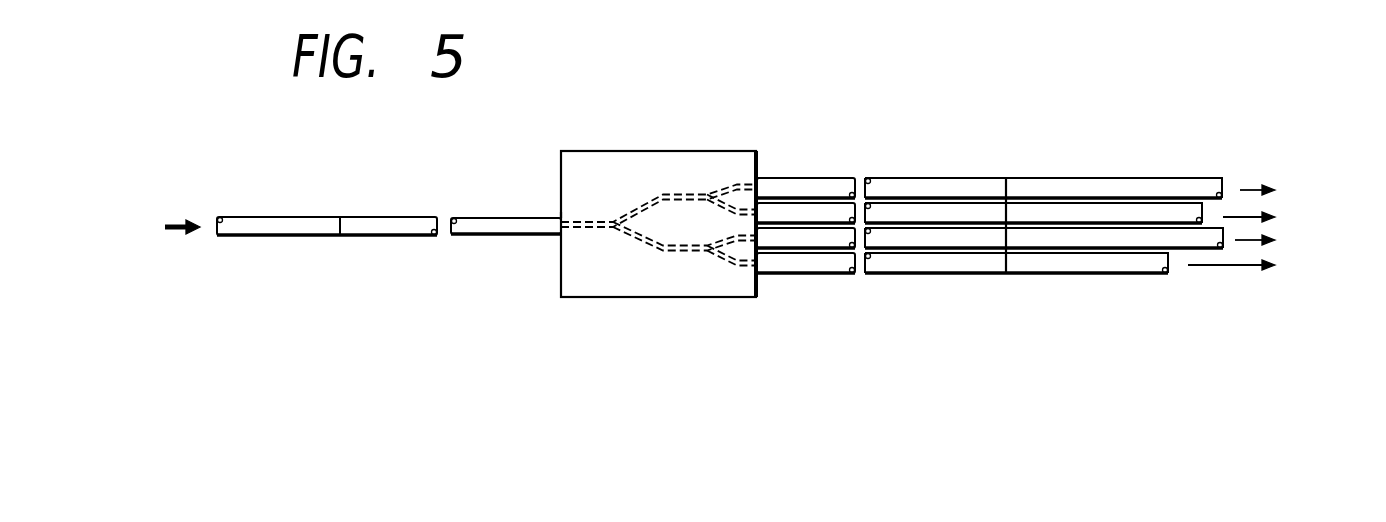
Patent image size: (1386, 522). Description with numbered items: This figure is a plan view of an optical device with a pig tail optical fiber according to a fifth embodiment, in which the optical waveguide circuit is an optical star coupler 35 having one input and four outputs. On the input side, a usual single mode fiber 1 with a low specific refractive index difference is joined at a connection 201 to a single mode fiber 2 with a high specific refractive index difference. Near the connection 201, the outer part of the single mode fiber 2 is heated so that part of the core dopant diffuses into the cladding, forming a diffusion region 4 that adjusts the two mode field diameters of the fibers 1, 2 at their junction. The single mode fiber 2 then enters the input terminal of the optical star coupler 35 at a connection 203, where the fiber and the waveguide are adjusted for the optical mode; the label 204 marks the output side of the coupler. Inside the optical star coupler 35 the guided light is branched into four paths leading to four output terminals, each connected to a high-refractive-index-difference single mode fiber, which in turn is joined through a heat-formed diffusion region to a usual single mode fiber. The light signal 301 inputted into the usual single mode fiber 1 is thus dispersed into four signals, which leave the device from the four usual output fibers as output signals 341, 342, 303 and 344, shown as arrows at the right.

The usual single mode fiber 1 is at (260, 236).
The single mode fiber with a high specific refractive index difference 2 is at (485, 237).
The diffusion region 4 is at (397, 212).
The optical star coupler 35 is at (603, 298).
The connection 201 is at (338, 218).
The connection 203 is at (561, 212).
The output port of splitter 204 is at (762, 180).
The light signal 301 is at (173, 220).
The output signal 341 is at (1281, 188).
The output signal 342 is at (1273, 215).
The third output light 303 is at (1279, 241).
The output signal 344 is at (1255, 270).